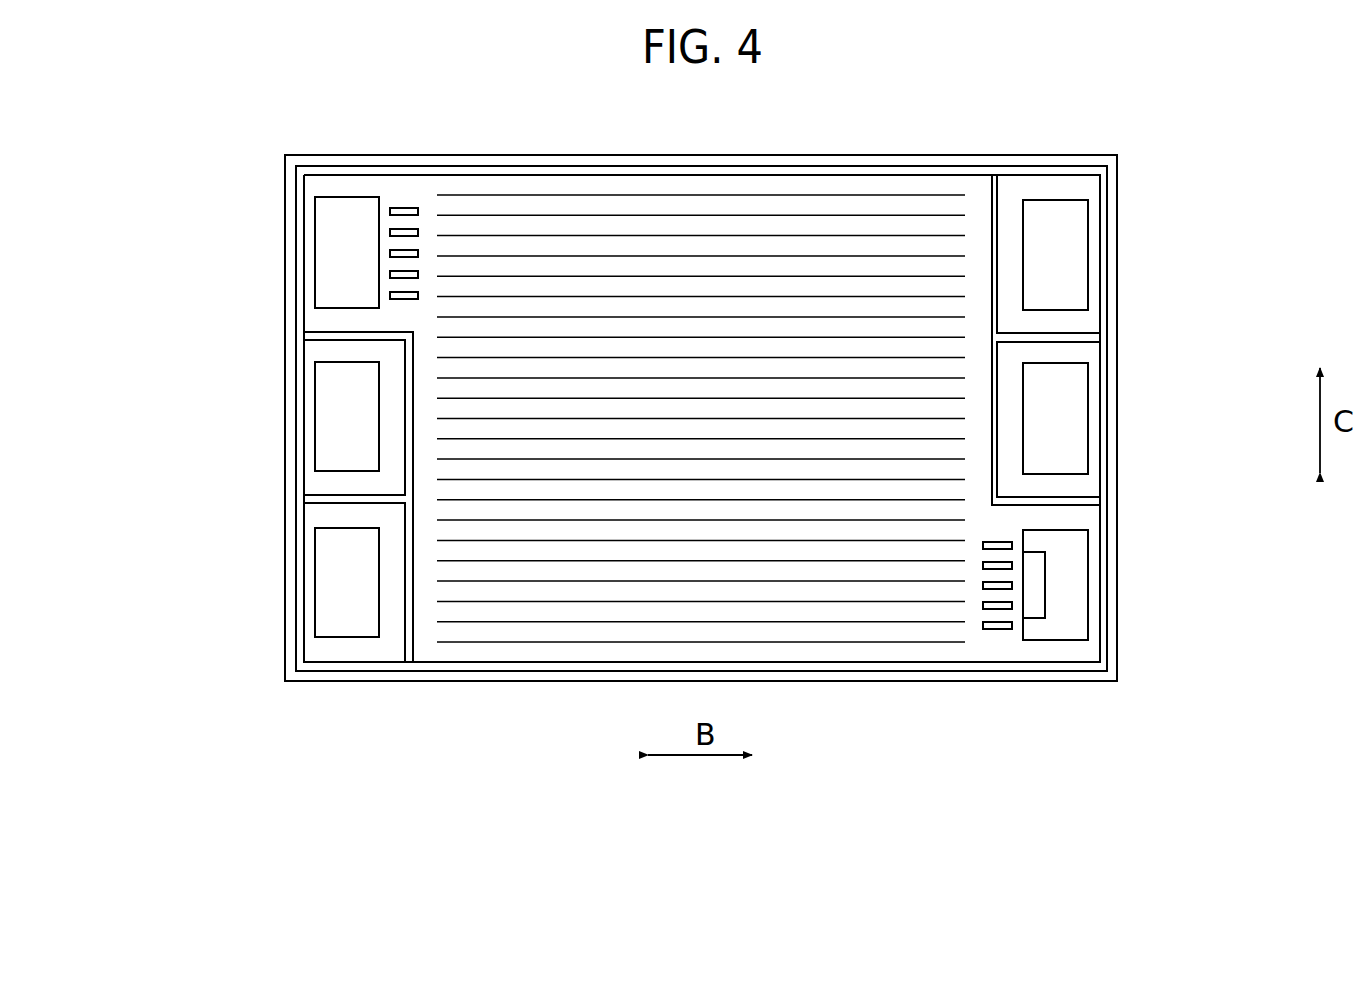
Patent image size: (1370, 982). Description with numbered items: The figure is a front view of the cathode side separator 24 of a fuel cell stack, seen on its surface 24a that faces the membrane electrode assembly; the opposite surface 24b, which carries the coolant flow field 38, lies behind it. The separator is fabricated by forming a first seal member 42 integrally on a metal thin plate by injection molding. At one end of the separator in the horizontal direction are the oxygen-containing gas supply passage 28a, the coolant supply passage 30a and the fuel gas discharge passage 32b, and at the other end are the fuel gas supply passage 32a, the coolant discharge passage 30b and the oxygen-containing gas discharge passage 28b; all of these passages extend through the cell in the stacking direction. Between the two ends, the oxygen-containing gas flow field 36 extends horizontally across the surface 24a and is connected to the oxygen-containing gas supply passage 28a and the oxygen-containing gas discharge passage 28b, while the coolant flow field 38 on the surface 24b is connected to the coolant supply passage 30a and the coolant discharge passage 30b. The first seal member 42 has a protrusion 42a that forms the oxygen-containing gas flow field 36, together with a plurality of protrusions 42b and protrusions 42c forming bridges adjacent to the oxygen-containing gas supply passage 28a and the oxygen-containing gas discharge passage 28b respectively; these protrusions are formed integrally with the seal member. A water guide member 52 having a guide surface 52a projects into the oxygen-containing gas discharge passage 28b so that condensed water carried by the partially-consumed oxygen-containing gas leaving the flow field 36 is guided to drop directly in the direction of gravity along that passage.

The cathode side separator 24 is at (954, 80).
The surface 24a is at (808, 658).
The surface 24b is at (858, 657).
The oxygen-containing gas supply passage 28a is at (345, 215).
The oxygen-containing gas discharge passage 28b is at (1062, 547).
The coolant supply passage 30a is at (338, 400).
The coolant discharge passage 30b is at (1062, 400).
The fuel gas supply passage 32a is at (1065, 215).
The fuel gas discharge passage 32b is at (345, 545).
The oxygen-containing gas flow field 36 is at (555, 595).
The coolant flow field 38 is at (622, 595).
The first seal member 42 is at (916, 153).
The protrusion 42a is at (846, 173).
The protrusions 42b is at (401, 209).
The protrusions 42c is at (1000, 629).
The water guide member 52 is at (1052, 590).
The guide surface 52a is at (1033, 605).